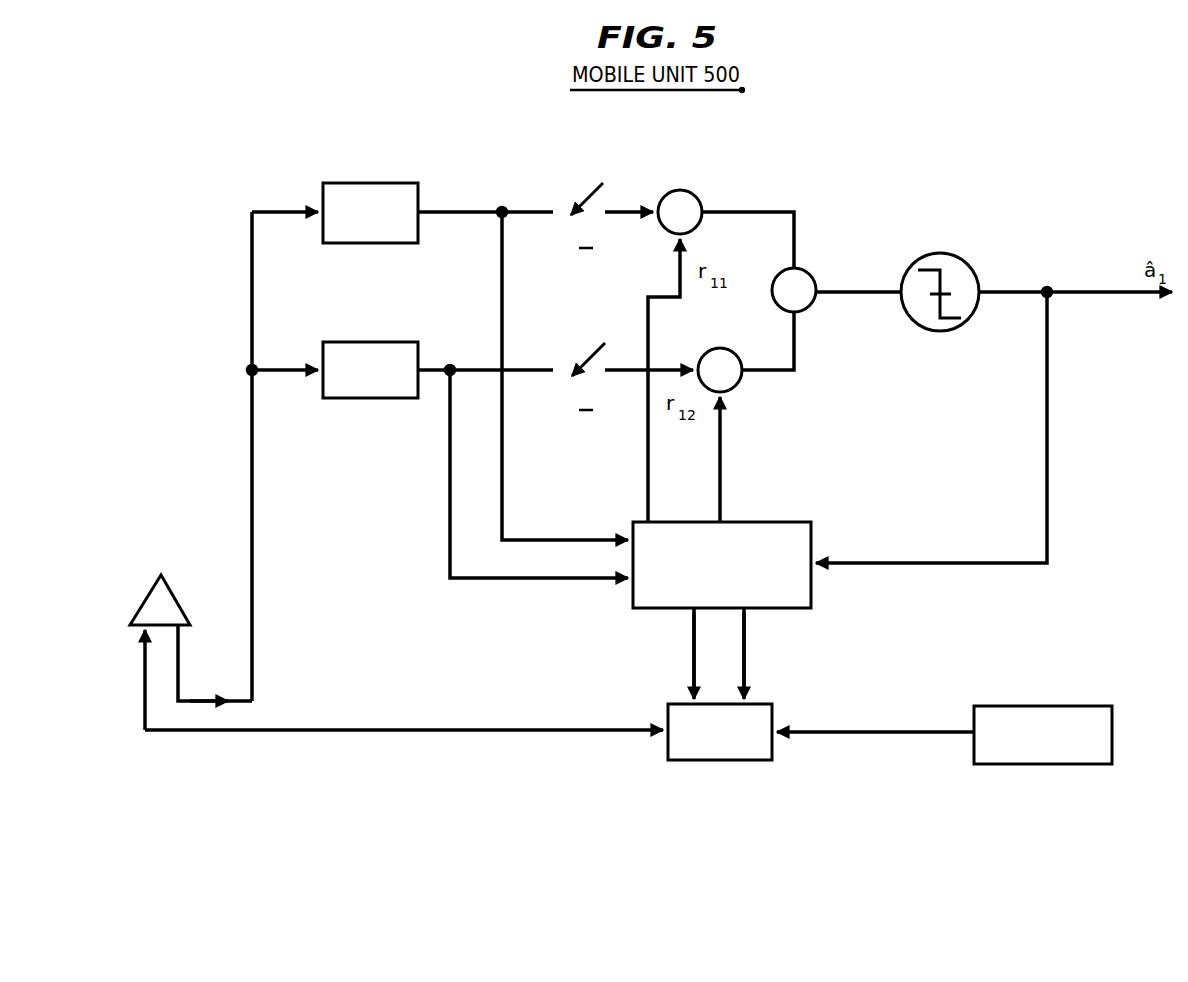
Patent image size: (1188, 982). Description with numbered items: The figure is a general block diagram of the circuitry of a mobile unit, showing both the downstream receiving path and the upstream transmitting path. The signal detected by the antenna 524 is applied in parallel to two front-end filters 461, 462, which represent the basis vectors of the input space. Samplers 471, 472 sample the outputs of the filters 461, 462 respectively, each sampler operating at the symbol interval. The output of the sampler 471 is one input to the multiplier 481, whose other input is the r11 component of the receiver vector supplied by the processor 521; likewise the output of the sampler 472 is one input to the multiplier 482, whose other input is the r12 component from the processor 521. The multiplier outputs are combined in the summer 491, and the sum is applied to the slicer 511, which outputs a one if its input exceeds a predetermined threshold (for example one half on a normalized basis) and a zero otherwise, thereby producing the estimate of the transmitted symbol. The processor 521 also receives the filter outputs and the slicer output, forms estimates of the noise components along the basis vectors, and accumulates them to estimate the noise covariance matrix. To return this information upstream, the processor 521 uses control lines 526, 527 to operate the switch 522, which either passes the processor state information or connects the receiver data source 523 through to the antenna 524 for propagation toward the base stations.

The front-end filter 461 is at (345, 183).
The front-end filter 462 is at (355, 398).
The sampler 471 is at (588, 190).
The sampler 472 is at (582, 350).
The multiplier 481 is at (698, 196).
The multiplier 482 is at (738, 384).
The summer 491 is at (812, 274).
The slicer 511 is at (962, 260).
The processor 521 is at (811, 534).
The switch 522 is at (762, 760).
The receiver data source 523 is at (1112, 718).
The antenna 524 is at (155, 585).
The control line 526 is at (692, 668).
The control line 527 is at (746, 668).